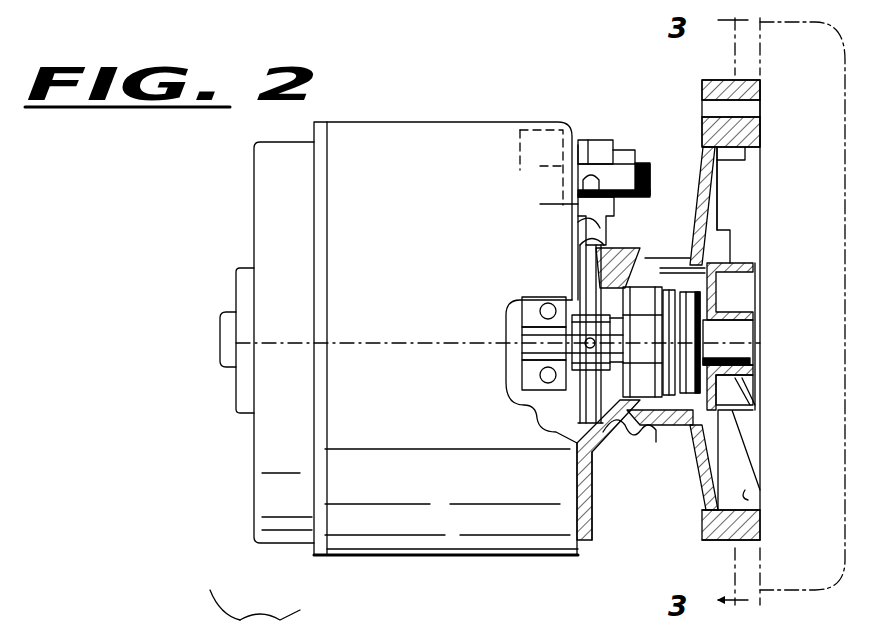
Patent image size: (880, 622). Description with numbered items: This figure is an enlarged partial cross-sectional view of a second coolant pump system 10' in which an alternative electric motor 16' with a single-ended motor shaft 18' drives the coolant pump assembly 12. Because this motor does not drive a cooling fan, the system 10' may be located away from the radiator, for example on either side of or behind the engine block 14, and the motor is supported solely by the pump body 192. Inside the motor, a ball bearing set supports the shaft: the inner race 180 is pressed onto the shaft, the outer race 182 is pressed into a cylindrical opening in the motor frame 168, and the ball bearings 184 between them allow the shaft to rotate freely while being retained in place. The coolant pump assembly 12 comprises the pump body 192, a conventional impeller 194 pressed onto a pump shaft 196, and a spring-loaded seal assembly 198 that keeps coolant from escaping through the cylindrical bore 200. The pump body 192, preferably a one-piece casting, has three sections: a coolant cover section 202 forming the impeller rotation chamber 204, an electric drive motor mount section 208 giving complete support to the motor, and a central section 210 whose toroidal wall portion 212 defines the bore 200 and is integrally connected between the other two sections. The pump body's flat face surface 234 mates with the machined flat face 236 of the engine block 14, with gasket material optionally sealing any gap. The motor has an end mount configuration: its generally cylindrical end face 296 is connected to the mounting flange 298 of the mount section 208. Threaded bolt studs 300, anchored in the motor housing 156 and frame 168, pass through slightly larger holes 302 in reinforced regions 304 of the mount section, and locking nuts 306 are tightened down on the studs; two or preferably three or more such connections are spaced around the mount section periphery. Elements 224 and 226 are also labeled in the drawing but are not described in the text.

The second coolant pump system 10' is at (596, 42).
The coolant pump assembly 12 is at (690, 98).
The engine block 14 is at (808, 400).
The alternative electric motor 16' is at (490, 299).
The single-ended motor shaft 18' is at (524, 342).
The housing 156 is at (525, 126).
The motor frame 168 is at (548, 436).
The inner race 180 is at (522, 362).
The outer race 182 is at (528, 384).
The ball bearings 184 is at (525, 304).
The pump body 192 is at (762, 147).
The impeller 194 is at (742, 217).
The pump shaft 196 is at (745, 345).
The spring-loaded seal assembly 198 is at (690, 402).
The cylindrical bore 200 is at (640, 282).
The coolant cover section 202 is at (705, 547).
The impeller rotation chamber 204 is at (748, 160).
The electric drive motor mount section 208 is at (604, 132).
The central section 210 is at (680, 250).
The toroidal wall portion 212 is at (656, 402).
The bracket 224 is at (280, 612).
The bracket arm 226 is at (206, 593).
The flat face surface 234 is at (762, 521).
The machined flat face 236 is at (760, 497).
The cylindrical end face 296 is at (560, 204).
The mounting flange 298 is at (598, 522).
The threaded bolt studs 300 is at (540, 166).
The holes 302 is at (582, 222).
The reinforced regions 304 is at (584, 244).
The locking nuts 306 is at (626, 152).